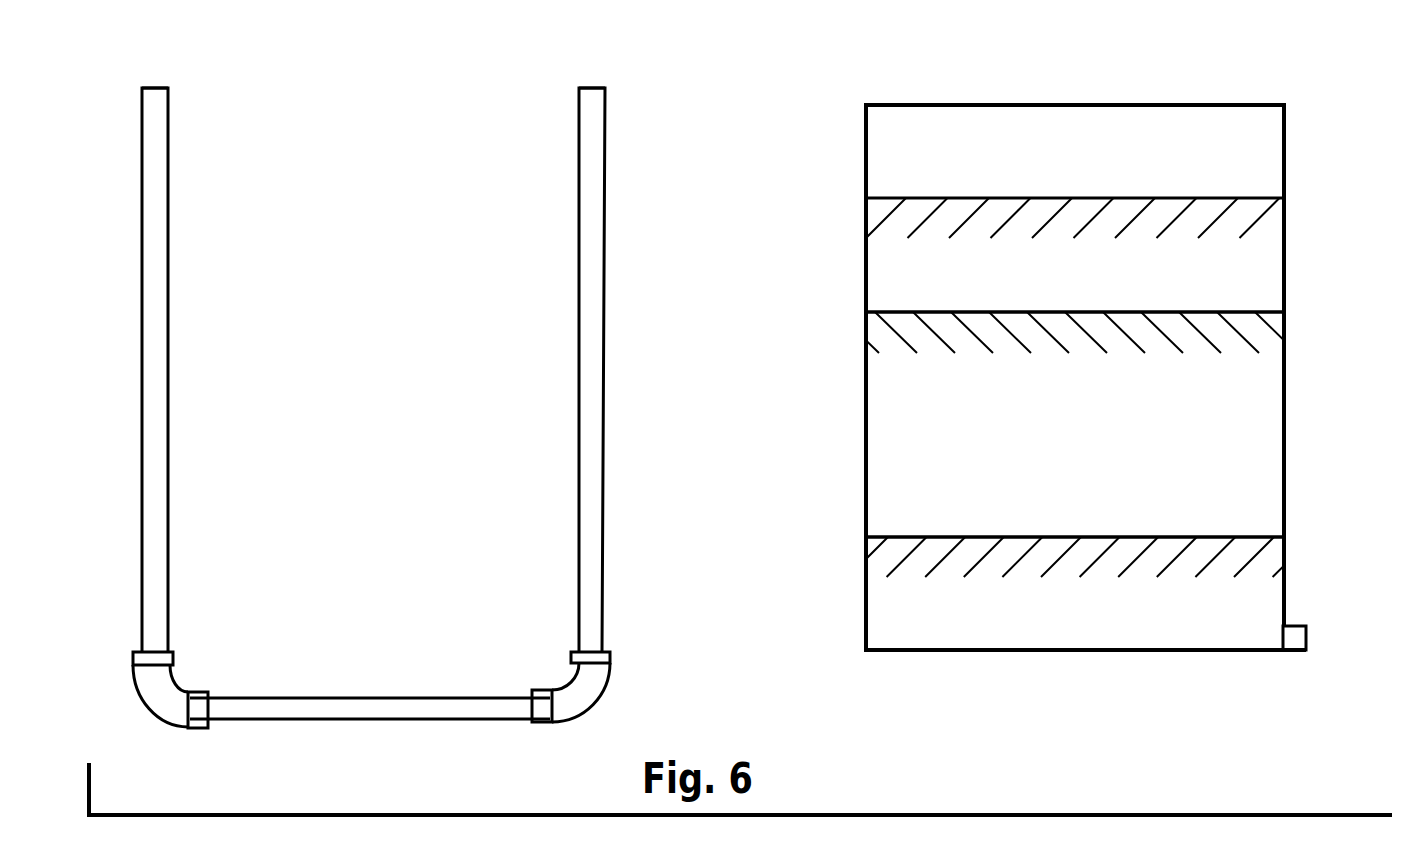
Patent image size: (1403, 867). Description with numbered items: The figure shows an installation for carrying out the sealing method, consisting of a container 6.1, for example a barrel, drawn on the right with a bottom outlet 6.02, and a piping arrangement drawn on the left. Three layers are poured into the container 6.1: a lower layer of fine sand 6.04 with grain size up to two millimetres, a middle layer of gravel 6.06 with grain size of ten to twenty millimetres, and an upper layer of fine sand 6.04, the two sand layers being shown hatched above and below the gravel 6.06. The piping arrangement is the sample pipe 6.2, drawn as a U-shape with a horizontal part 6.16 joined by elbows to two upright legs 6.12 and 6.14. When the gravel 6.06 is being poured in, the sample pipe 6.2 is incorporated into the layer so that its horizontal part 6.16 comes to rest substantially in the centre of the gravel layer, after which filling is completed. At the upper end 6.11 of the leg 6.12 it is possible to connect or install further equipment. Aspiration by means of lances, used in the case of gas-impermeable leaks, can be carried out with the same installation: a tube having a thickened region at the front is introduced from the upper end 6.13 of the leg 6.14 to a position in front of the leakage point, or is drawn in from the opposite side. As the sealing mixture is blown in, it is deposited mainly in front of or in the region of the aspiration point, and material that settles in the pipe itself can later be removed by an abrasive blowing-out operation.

The container 6.1 is at (1286, 171).
The bottom outlet 6.02 is at (1292, 652).
The fine sand layer 6.04 is at (1012, 283).
The gravel layer 6.06 is at (1000, 453).
The sample pipe 6.2 is at (566, 228).
The connection point of sample pipe 6.11 is at (155, 83).
The vertical pipe leg 6.12 is at (159, 337).
The introduction end of sample pipe 6.13 is at (593, 78).
The vertical pipe leg 6.14 is at (590, 468).
The horizontal part of sample pipe 6.16 is at (361, 708).